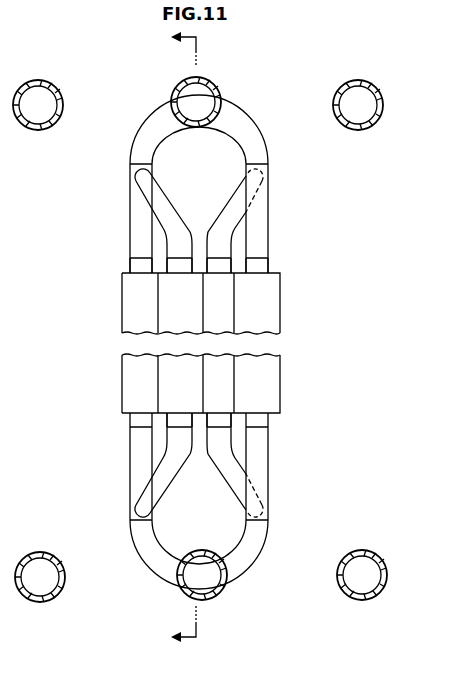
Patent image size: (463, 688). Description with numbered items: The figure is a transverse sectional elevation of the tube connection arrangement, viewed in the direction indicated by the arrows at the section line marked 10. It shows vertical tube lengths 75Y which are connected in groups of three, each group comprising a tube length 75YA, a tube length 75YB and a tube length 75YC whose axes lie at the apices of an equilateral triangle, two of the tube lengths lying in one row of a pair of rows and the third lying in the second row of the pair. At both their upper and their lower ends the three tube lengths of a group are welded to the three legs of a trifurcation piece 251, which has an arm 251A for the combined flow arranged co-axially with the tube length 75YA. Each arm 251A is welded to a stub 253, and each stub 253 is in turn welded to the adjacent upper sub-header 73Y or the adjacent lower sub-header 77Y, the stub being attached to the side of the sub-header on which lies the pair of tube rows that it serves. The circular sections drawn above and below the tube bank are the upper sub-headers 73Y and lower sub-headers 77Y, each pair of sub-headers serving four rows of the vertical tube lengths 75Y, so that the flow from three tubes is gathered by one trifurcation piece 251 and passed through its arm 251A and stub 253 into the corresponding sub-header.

The section line reference 10 is at (173, 341).
The upper sub-header 73Y is at (62, 90).
The lower sub-header 77Y is at (179, 589).
The stub 253 is at (158, 128).
The trifurcation piece 251 is at (130, 216).
The arm 251A is at (141, 176).
The vertical tube lengths 75Y is at (210, 398).
The tube length 75YA is at (138, 267).
The tube length 75YB is at (168, 270).
The tube length 75YC is at (217, 268).